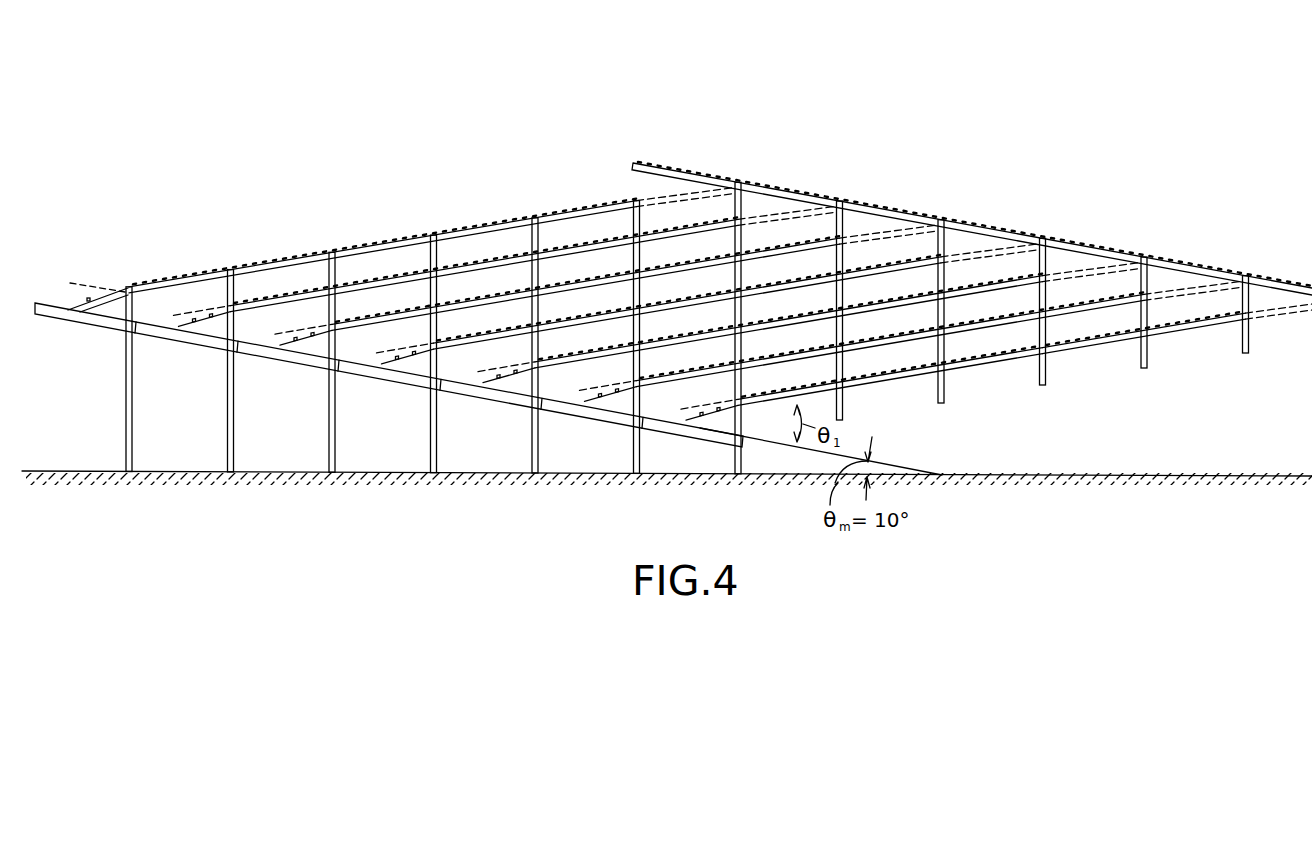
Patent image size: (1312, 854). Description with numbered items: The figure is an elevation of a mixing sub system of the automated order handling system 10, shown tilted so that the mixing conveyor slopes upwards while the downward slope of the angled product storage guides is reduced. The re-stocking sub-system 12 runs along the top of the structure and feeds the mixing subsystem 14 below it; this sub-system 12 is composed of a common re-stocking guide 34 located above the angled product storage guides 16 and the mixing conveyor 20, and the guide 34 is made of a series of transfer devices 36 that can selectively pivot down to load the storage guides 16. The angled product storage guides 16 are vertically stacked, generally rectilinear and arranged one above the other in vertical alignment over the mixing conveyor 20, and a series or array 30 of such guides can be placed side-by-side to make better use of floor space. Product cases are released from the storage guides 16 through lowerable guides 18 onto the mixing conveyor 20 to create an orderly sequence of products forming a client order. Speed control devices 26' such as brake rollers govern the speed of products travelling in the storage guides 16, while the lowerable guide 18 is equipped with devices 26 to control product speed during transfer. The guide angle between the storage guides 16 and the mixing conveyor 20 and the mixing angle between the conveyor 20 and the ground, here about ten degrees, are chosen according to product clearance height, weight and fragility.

The system for automated order handling 10 is at (205, 143).
The product re-stocking sub-system 12 is at (722, 125).
The mixing subsystem 14 is at (350, 205).
The angled product storage guides 16 is at (473, 226).
The lowerable guide 18 is at (100, 288).
The mixing conveyor 20 is at (82, 320).
The speed control devices 26 is at (115, 277).
The speed control devices 26' is at (205, 263).
The arrays of angled product storage guides 30 is at (1102, 363).
The common re-stocking guide 34 is at (791, 173).
The transfer devices 36 is at (870, 203).